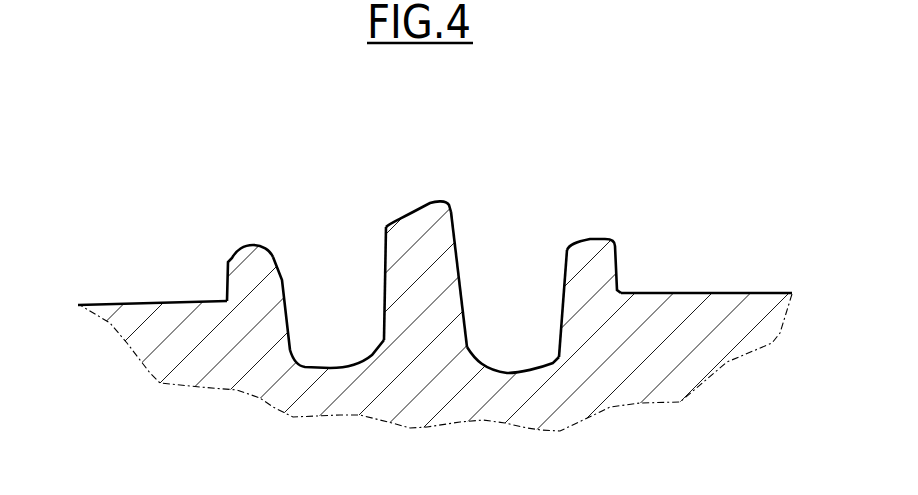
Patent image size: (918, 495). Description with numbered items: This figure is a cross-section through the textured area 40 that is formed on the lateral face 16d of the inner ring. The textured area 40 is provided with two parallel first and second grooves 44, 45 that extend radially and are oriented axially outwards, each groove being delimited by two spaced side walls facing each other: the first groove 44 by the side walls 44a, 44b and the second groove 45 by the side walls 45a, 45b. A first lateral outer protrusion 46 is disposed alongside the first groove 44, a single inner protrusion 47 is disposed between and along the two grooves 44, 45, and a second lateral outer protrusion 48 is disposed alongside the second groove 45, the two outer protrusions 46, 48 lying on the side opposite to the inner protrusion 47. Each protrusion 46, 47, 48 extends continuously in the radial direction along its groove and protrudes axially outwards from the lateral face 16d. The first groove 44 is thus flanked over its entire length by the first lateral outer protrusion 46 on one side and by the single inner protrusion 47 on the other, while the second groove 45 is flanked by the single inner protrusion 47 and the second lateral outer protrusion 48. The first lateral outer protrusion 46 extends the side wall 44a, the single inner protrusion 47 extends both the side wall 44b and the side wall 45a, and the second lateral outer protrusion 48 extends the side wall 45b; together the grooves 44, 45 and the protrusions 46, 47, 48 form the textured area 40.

The lateral face 16d is at (148, 302).
The textured area 40 is at (451, 307).
The first groove 44 is at (323, 318).
The side wall 44a is at (282, 280).
The side wall 44b is at (385, 267).
The second groove 45 is at (513, 318).
The side wall 45a is at (458, 267).
The side wall 45b is at (562, 284).
The first lateral outer protrusion 46 is at (247, 252).
The single inner protrusion 47 is at (417, 212).
The second lateral outer protrusion 48 is at (592, 247).